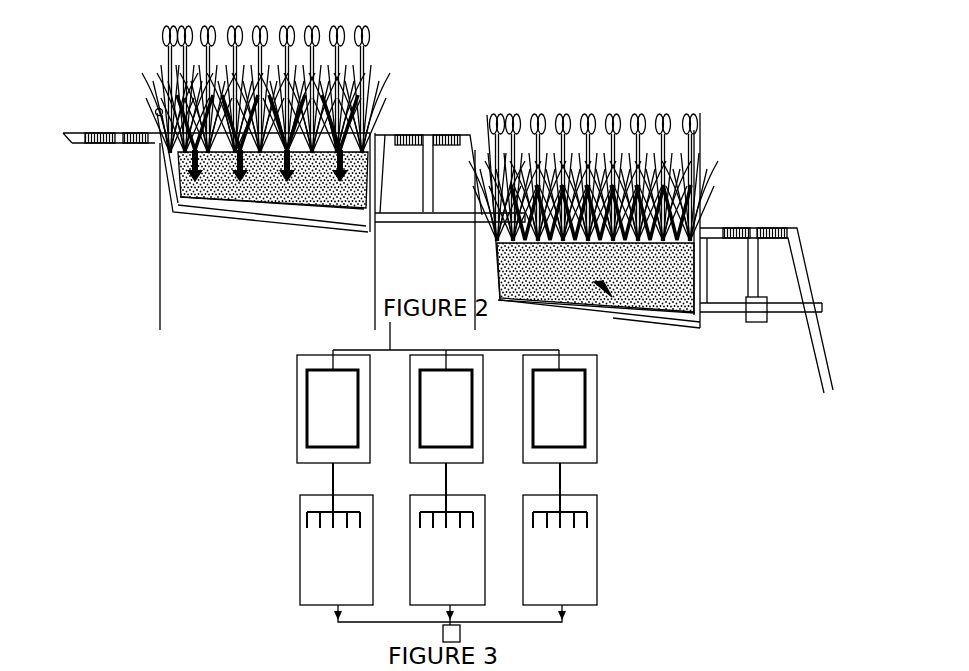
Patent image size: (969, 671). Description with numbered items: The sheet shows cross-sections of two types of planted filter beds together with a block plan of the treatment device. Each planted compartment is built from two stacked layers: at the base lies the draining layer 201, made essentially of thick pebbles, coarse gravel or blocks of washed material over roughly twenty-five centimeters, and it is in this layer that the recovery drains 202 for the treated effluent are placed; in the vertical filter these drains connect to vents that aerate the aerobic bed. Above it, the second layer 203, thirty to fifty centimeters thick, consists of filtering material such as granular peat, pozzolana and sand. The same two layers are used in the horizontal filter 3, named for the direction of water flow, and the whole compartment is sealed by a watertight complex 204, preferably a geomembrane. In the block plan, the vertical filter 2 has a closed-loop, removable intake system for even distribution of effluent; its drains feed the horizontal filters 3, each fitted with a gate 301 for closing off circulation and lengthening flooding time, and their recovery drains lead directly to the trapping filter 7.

In FIG. 2, the draining layer 201 is at (197, 208).
In FIG. 2, the recovery drains 202 is at (258, 205).
In FIG. 2, the second layer 203 is at (327, 193).
In FIG. 2, the watertight complex 204 is at (712, 225).
In FIG. 2, the horizontal filter 3 is at (607, 287).
In FIG. 3, the horizontal filter 3 is at (333, 477).
In FIG. 3, the vertical filter 2 is at (307, 416).
In FIG. 3, the gate 301 is at (562, 598).
In FIG. 3, the trapping filter 7 is at (460, 627).